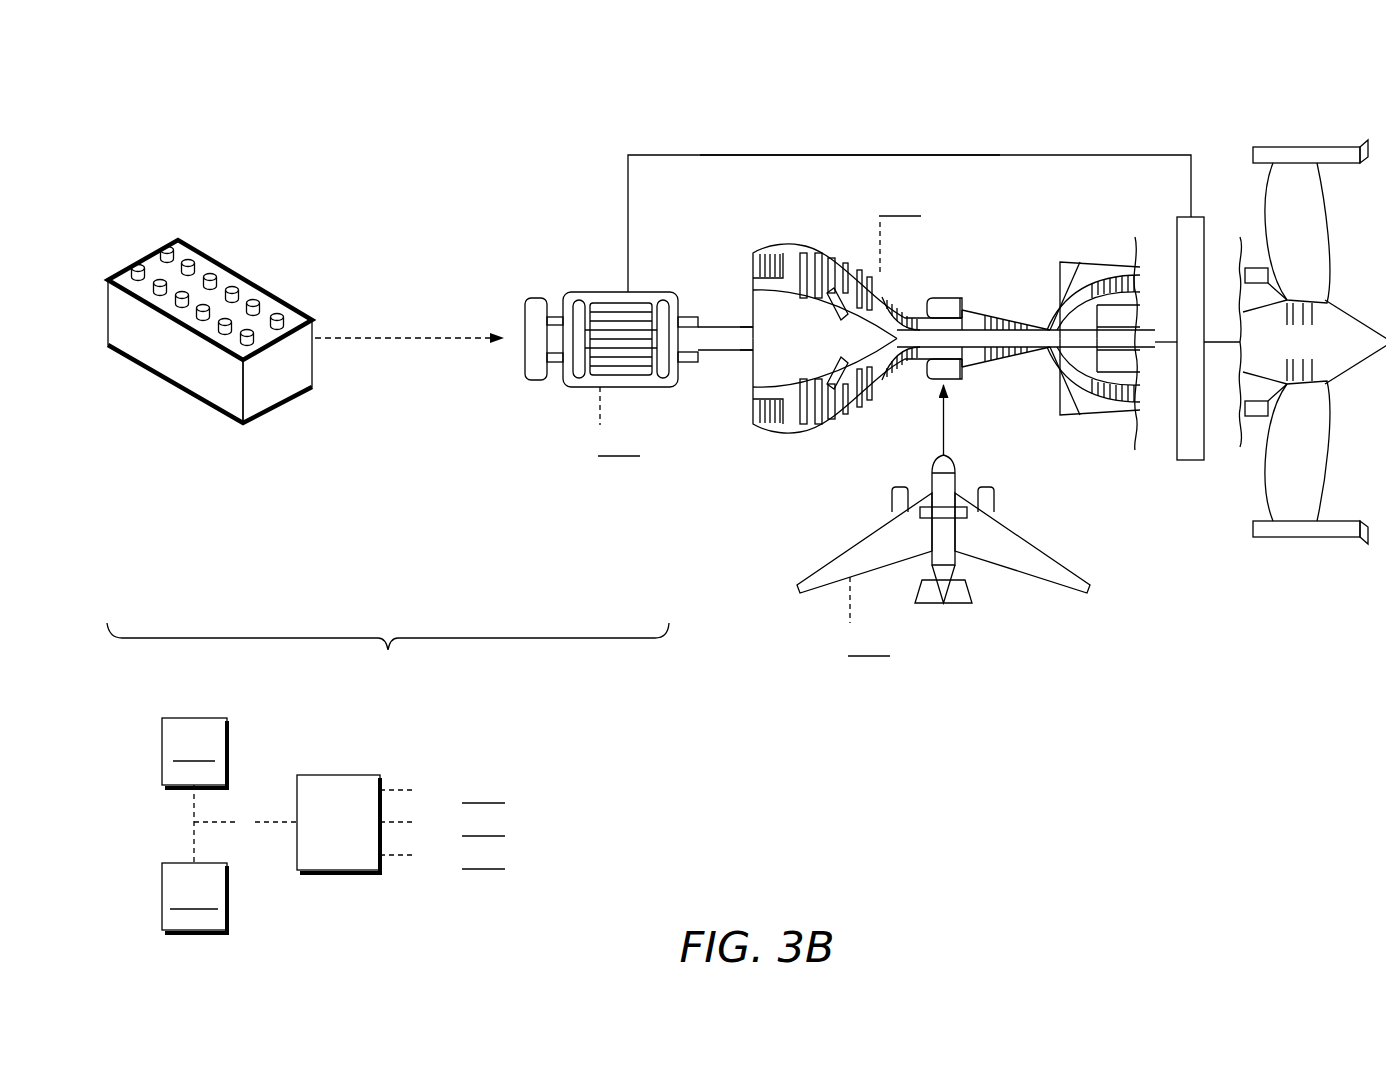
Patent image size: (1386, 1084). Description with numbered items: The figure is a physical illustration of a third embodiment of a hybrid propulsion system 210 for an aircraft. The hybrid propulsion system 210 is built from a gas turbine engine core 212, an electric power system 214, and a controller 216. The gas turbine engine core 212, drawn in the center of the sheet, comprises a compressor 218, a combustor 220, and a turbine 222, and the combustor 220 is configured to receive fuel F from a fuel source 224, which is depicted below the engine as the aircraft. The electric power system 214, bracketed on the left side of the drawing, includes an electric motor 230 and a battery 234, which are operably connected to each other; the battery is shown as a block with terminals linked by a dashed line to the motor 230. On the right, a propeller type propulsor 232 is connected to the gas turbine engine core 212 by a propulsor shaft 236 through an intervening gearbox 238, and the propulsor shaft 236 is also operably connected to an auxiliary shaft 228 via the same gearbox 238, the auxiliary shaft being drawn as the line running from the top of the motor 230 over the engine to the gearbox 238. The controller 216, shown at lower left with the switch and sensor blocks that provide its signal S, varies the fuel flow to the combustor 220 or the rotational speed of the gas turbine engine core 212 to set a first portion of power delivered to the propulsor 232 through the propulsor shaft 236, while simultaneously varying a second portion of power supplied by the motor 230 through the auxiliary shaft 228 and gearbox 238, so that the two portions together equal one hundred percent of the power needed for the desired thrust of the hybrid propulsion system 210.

The hybrid propulsion system 210 is at (231, 139).
The gas turbine engine core 212 is at (771, 498).
The electric power system 214 is at (388, 657).
The controller 216 is at (320, 837).
The compressor 218 is at (803, 245).
The combustor 220 is at (940, 297).
The turbine 222 is at (1080, 262).
The fuel source 224 is at (987, 608).
The auxiliary shaft 228 is at (955, 153).
The electric motor 230 is at (669, 403).
The propeller 232 is at (1356, 532).
The battery 234 is at (301, 429).
The propulsor shaft 236 is at (1155, 343).
The gearbox 238 is at (1190, 462).